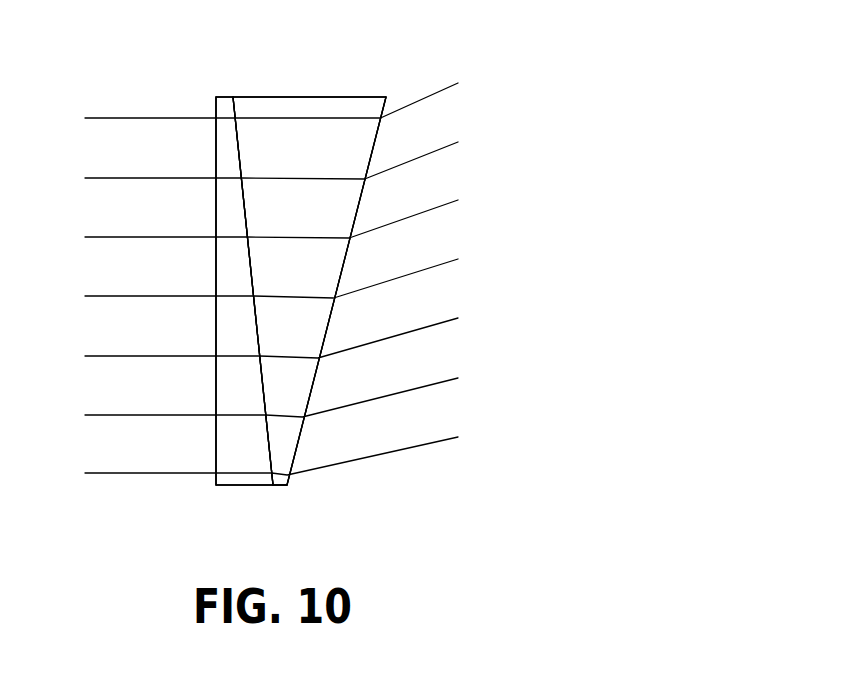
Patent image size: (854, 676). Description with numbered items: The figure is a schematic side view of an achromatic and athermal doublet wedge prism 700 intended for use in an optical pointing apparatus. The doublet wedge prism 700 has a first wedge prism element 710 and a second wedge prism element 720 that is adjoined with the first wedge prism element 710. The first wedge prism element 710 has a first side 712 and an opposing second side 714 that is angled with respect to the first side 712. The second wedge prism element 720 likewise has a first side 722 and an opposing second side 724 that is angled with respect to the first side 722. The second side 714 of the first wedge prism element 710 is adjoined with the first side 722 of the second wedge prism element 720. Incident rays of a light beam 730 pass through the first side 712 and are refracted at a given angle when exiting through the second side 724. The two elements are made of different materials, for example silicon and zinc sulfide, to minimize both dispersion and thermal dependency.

The doublet wedge prism 700 is at (341, 55).
The first wedge prism element 710 is at (240, 450).
The first side 712 is at (215, 292).
The second side 714 is at (255, 332).
The second wedge prism element 720 is at (267, 125).
The first side 722 is at (250, 232).
The second side 724 is at (338, 280).
The light beam 730 is at (158, 177).